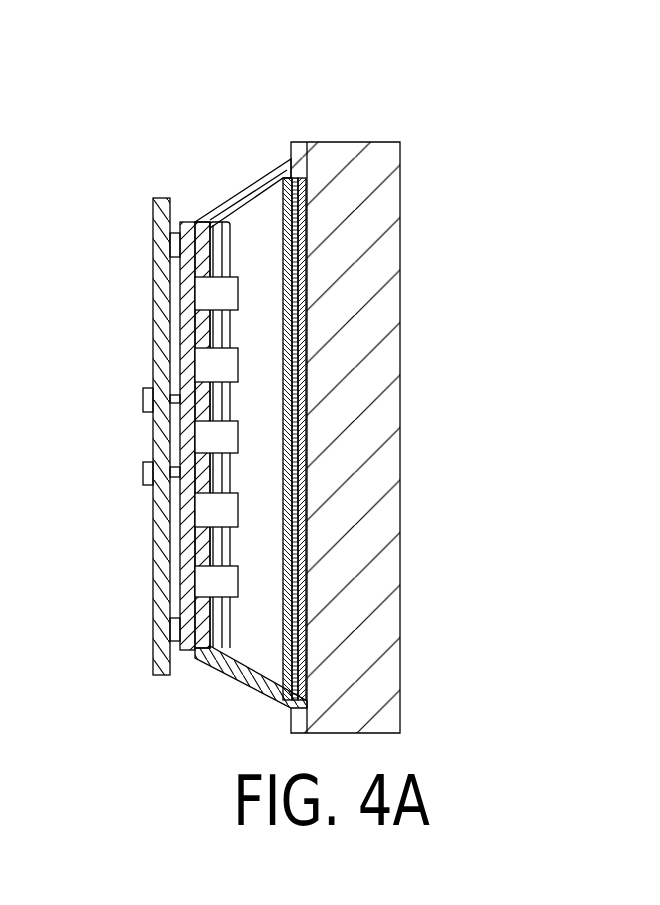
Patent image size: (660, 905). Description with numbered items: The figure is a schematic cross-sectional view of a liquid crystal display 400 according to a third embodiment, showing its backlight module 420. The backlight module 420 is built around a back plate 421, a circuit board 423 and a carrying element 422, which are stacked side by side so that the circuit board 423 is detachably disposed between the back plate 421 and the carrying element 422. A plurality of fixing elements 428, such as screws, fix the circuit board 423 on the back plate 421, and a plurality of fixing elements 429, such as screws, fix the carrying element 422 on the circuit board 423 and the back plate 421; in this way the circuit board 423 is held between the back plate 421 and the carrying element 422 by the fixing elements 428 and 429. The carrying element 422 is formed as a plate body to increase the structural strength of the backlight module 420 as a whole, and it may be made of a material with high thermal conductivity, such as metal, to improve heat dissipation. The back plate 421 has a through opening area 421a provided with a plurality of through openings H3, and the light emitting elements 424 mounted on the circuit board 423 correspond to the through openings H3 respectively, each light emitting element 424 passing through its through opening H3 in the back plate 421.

The liquid crystal display 400 is at (630, 610).
The backlight module 420 is at (152, 153).
The back plate 421 is at (255, 190).
The through opening area 421a is at (243, 425).
The carrying element 422 is at (153, 532).
The circuit board 423 is at (187, 650).
The light emitting element 424 is at (230, 294).
The fixing element 428 is at (170, 242).
The fixing element 429 is at (145, 397).
The through opening H3 is at (213, 320).